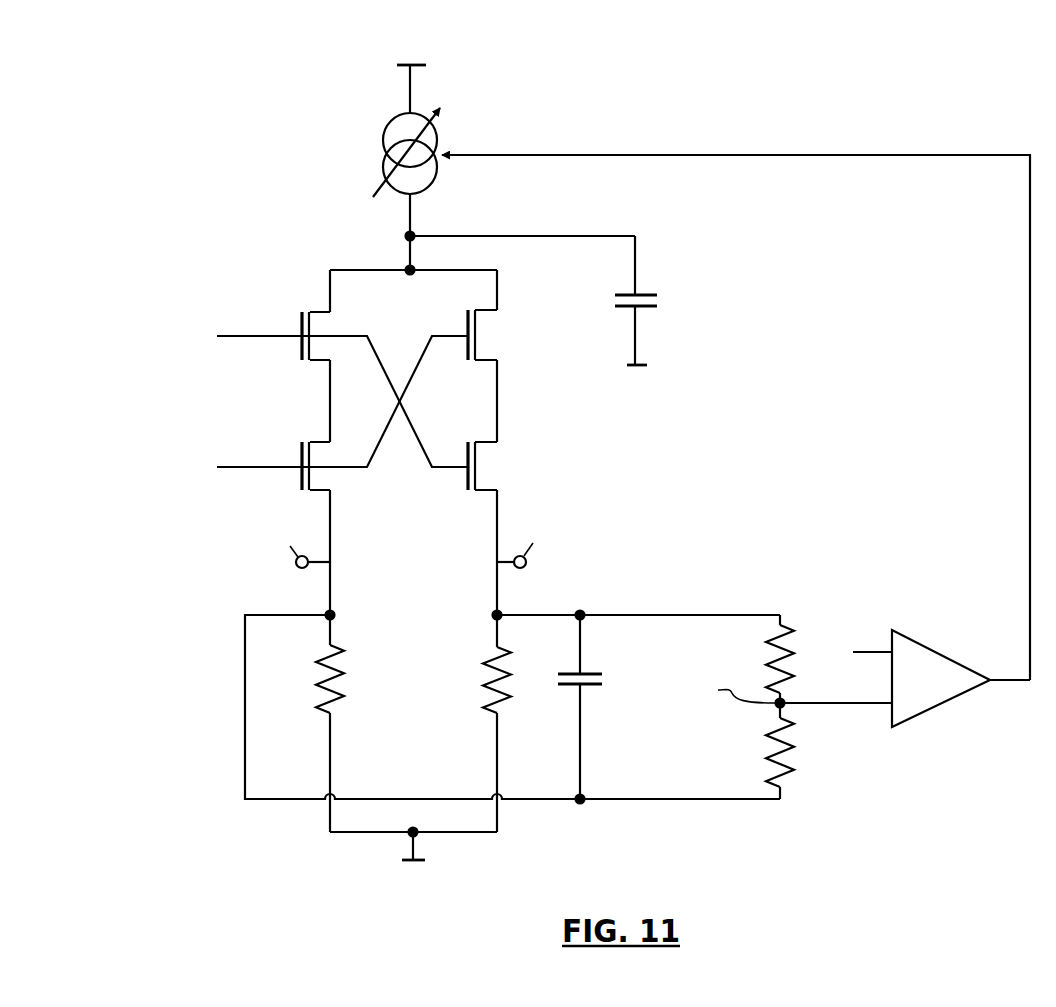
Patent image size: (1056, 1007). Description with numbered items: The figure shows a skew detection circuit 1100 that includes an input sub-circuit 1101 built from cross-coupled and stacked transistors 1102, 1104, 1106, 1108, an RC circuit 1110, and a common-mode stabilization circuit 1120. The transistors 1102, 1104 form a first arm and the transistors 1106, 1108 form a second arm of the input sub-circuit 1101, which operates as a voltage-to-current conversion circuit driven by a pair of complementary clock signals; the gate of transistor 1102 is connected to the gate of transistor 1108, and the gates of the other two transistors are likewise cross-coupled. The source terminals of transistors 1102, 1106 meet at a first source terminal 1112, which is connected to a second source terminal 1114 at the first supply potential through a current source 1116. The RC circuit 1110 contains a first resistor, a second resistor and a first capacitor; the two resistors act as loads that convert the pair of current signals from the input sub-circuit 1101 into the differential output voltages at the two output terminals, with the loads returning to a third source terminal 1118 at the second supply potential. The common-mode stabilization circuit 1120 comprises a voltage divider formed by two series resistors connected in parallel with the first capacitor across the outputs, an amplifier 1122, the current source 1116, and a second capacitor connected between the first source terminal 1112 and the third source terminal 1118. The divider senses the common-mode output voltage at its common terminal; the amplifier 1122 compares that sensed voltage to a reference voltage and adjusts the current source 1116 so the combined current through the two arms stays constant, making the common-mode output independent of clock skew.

The skew detection circuit 1100 is at (235, 68).
The input sub-circuit 1101 is at (391, 437).
The transistor 1102 is at (310, 312).
The transistor 1104 is at (310, 442).
The transistor 1106 is at (477, 318).
The transistor 1108 is at (477, 455).
The RC circuit 1110 is at (245, 594).
The first source terminal 1112 is at (406, 236).
The second source terminal 1114 is at (403, 70).
The current source 1116 is at (383, 146).
The third source terminal 1118 is at (643, 365).
The common-mode stabilization circuit 1120 is at (870, 713).
The amplifier 1122 is at (927, 643).